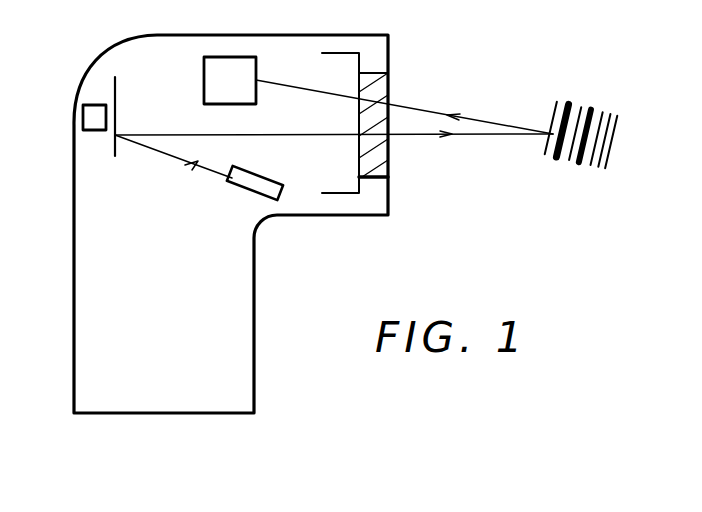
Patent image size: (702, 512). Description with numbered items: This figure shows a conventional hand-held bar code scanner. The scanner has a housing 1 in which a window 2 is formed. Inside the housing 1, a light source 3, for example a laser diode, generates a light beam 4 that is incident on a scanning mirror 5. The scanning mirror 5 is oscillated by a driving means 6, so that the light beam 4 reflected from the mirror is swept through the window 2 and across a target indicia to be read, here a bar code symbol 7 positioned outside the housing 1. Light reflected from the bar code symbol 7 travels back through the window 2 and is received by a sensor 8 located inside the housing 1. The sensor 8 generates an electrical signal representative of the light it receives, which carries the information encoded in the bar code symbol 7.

The housing 1 is at (233, 325).
The window 2 is at (380, 158).
The light source 3 is at (247, 189).
The light beam 4 is at (175, 157).
The scanning mirror 5 is at (116, 108).
The driving means 6 is at (95, 131).
The bar code symbol 7 is at (560, 158).
The sensor 8 is at (235, 70).